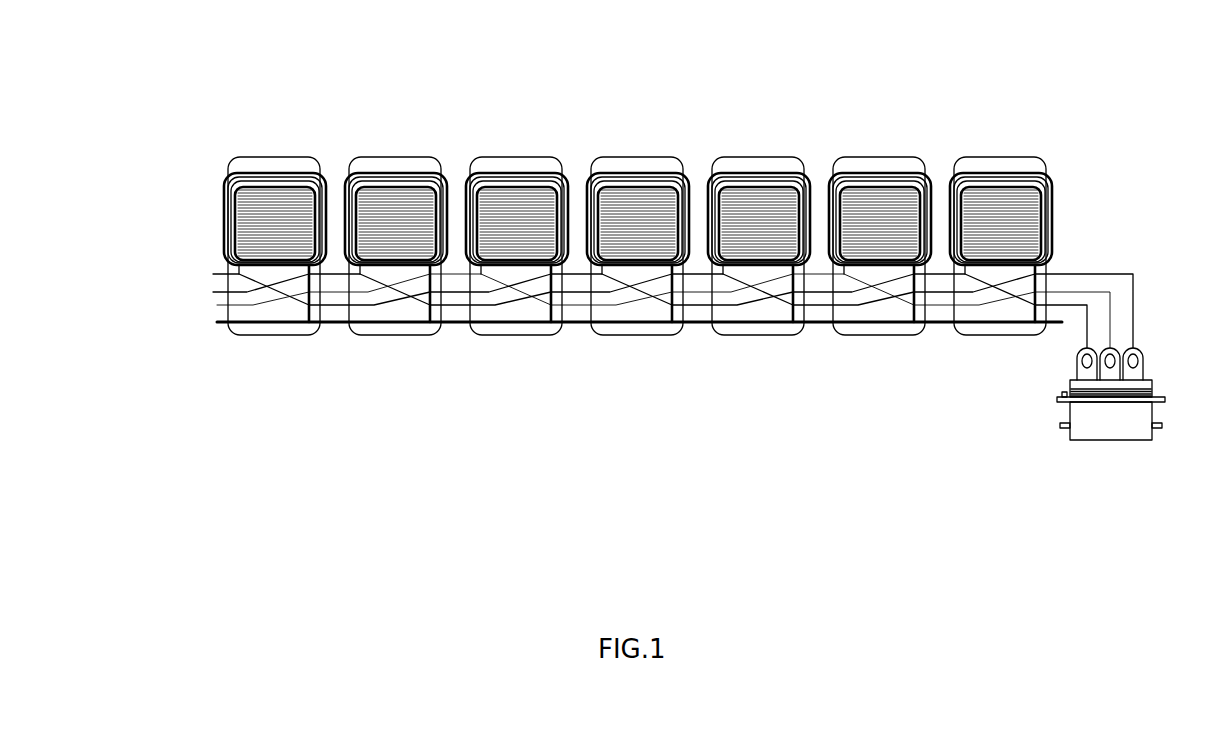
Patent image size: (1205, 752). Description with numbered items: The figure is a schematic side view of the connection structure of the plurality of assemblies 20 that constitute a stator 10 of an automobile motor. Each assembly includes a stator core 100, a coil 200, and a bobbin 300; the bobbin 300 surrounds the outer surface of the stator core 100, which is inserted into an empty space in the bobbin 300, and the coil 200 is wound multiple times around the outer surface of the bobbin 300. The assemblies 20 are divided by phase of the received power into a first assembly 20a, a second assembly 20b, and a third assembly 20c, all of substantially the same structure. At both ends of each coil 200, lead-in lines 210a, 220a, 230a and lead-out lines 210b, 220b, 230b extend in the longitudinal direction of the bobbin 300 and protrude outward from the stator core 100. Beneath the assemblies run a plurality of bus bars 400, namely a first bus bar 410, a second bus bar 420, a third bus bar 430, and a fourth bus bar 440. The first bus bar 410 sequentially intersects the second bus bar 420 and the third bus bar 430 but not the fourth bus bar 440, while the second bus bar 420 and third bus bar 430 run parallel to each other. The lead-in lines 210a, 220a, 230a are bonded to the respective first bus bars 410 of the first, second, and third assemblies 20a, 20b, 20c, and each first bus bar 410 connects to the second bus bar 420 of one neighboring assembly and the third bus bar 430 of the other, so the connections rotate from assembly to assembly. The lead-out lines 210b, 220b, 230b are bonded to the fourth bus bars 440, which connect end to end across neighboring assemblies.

The stator 10 is at (342, 32).
The assemblies 20 is at (308, 523).
The first assembly 20a is at (293, 131).
The second assembly 20b is at (405, 131).
The third assembly 20c is at (525, 131).
The stator core 100 is at (262, 245).
The coil 200 is at (224, 192).
The bobbin 300 is at (245, 158).
The bus bars 400 is at (132, 288).
The first bus bar 410 is at (213, 274).
The second bus bar 420 is at (217, 305).
The third bus bar 430 is at (213, 292).
The fourth bus bar 440 is at (217, 322).
The lead-in line 210a is at (243, 276).
The lead-out line 210b is at (309, 306).
The lead-in line 220a is at (363, 276).
The lead-out line 220b is at (430, 306).
The lead-in line 230a is at (484, 276).
The lead-out line 230b is at (550, 306).